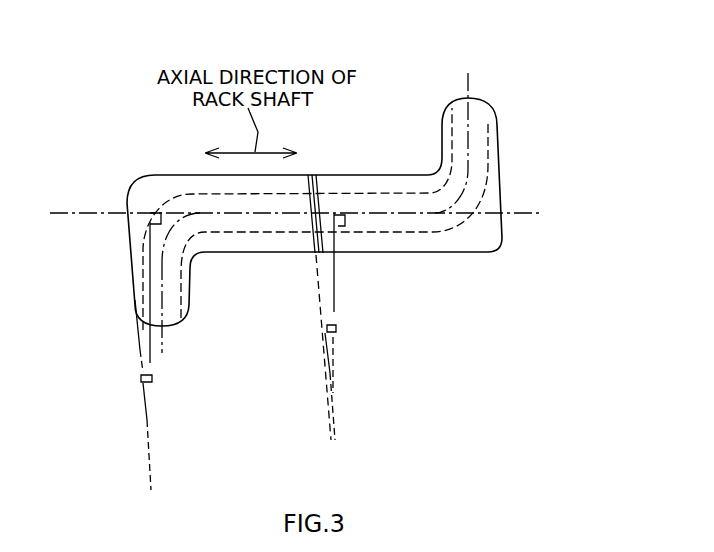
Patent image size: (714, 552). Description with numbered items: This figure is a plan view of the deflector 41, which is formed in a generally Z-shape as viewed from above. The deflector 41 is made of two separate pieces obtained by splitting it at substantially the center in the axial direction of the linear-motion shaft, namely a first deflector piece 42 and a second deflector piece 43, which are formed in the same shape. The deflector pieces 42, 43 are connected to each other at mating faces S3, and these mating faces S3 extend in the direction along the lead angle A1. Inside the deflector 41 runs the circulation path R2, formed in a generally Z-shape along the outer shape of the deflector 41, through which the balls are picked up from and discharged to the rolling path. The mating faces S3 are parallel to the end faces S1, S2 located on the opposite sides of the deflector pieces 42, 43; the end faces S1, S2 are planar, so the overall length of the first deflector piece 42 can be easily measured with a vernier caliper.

The deflector 41 is at (498, 44).
The first deflector piece 42 is at (257, 243).
The second deflector piece 43 is at (452, 243).
The end face S1 is at (131, 280).
The end face S2 is at (502, 176).
The mating faces S3 is at (321, 202).
The circulation path R2 is at (185, 198).
The lead angle A1 is at (150, 363).